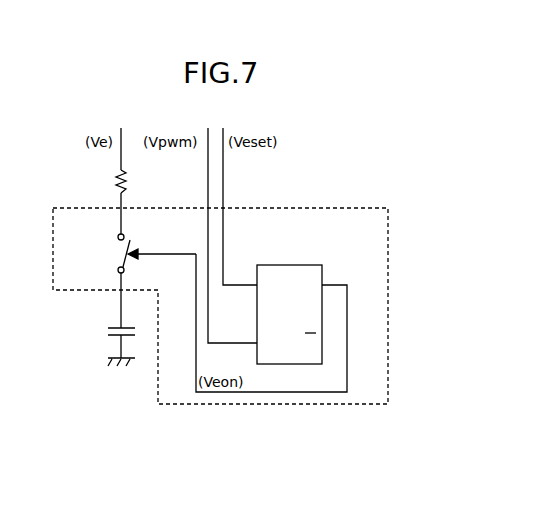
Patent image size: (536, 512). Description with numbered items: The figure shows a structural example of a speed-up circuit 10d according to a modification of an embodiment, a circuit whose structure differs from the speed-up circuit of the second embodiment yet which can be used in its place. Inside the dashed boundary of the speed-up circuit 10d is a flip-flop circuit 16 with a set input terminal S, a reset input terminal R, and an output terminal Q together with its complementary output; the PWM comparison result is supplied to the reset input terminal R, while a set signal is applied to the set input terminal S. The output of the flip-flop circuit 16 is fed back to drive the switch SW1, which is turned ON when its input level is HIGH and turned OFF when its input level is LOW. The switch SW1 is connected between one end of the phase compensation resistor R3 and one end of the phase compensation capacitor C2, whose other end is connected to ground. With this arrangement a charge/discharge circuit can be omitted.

The flip-flop circuit 16 is at (322, 268).
The speed-up circuit 10d is at (388, 250).
The phase compensation resistor R3 is at (107, 181).
The switch SW1 is at (123, 250).
The phase compensation capacitor C2 is at (111, 332).